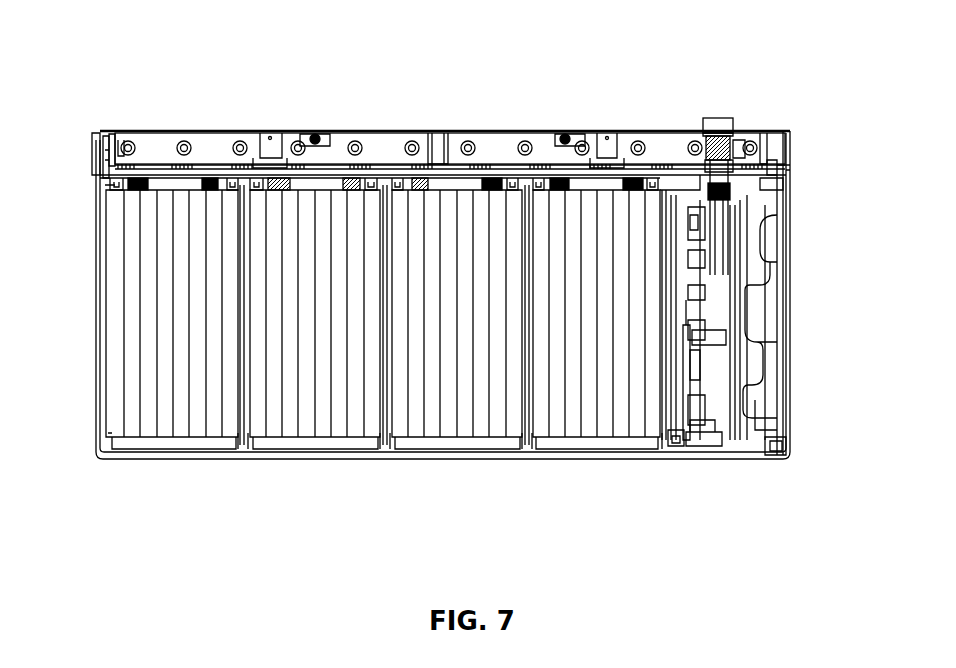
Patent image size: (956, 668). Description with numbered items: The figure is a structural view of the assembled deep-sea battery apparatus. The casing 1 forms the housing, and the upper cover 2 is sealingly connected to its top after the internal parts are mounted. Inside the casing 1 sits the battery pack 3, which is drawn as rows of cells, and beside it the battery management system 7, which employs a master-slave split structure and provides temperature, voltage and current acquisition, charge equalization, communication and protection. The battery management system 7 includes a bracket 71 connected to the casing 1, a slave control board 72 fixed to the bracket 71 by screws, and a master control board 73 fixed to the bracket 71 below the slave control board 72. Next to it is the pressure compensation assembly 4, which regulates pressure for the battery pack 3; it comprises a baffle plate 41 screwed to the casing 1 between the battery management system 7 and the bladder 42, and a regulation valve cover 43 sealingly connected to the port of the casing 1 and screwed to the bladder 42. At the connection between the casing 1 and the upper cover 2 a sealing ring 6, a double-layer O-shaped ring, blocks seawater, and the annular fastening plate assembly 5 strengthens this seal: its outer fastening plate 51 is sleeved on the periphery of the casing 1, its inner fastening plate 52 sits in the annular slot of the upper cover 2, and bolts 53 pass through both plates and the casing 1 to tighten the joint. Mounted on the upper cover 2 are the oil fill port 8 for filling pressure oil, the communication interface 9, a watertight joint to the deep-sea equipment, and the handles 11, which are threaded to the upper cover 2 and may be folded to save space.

The casing 1 is at (98, 295).
The upper cover 2 is at (182, 132).
The battery pack 3 is at (120, 348).
The pressure compensation assembly 4 is at (833, 339).
The baffle plate 41 is at (813, 460).
The bladder 42 is at (750, 387).
The regulation valve cover 43 is at (783, 342).
The fastening plate assembly 5 is at (93, 97).
The outer fastening plate 51 is at (92, 147).
The inner fastening plate 52 is at (109, 143).
The bolts 53 is at (129, 123).
The sealing ring 6 is at (777, 170).
The battery management system 7 is at (708, 378).
The bracket 71 is at (677, 438).
The slave control board 72 is at (698, 440).
The master control board 73 is at (688, 327).
The oil fill port 8 is at (735, 148).
The communication interface 9 is at (718, 122).
The handle 11 is at (302, 132).